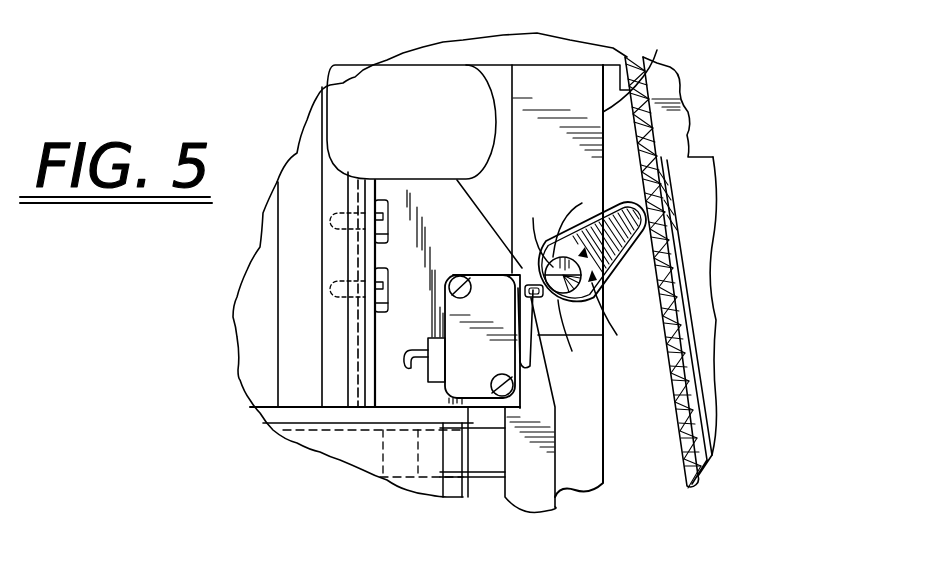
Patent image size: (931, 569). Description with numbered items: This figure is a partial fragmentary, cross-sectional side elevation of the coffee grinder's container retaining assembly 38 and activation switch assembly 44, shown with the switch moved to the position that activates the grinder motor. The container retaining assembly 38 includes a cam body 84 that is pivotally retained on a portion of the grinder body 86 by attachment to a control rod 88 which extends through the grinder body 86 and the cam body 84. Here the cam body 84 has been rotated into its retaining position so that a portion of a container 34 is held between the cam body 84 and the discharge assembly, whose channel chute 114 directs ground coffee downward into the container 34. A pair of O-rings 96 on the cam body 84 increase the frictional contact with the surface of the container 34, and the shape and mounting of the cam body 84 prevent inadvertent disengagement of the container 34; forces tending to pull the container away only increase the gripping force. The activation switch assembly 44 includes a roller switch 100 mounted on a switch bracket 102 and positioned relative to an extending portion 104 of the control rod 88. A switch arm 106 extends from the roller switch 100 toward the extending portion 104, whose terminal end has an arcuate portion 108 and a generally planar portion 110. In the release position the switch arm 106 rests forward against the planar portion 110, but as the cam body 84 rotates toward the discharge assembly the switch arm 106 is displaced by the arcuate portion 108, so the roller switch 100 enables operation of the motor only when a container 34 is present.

The container 34 is at (680, 457).
The container retaining assembly 38 is at (628, 472).
The activation switch assembly 44 is at (509, 435).
The cam body 84 is at (628, 200).
The grinder body 86 is at (648, 97).
The control rod 88 is at (621, 213).
The O-rings 96 is at (642, 267).
The roller switch 100 is at (492, 364).
The switch bracket 102 is at (392, 390).
The extending portion 104 is at (620, 322).
The switch arm 106 is at (527, 372).
The arcuate portion 108 is at (576, 338).
The planar portion 110 is at (557, 240).
The channel chute 114 is at (672, 393).